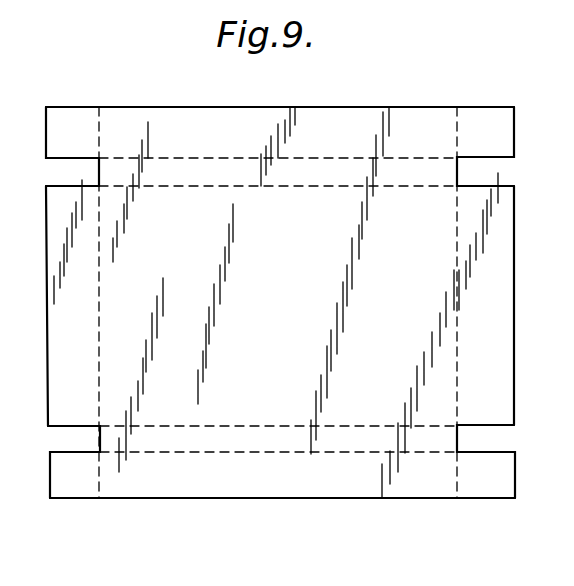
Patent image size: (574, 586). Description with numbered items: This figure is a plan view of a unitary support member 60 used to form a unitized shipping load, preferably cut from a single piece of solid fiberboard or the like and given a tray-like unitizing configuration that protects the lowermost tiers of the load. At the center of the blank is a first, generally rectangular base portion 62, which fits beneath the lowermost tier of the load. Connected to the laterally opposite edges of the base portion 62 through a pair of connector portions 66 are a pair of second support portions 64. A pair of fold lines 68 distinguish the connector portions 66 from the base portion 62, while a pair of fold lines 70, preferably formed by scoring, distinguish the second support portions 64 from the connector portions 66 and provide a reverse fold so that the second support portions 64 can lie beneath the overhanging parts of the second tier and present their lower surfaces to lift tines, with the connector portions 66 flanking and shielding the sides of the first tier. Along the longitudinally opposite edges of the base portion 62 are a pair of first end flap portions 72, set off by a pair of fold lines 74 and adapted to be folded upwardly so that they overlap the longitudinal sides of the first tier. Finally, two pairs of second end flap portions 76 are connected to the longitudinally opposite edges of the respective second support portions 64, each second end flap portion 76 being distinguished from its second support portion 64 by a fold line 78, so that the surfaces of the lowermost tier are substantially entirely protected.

The support member 60 is at (405, 91).
The base portion 62 is at (266, 304).
The second support portions 64 is at (351, 139).
The connector portions 66 is at (282, 182).
The fold lines 68 is at (197, 187).
The fold lines 70 is at (202, 157).
The first end flap portions 72 is at (62, 323).
The fold lines 74 is at (102, 258).
The second end flap portions 76 is at (85, 142).
The fold line 78 is at (103, 119).